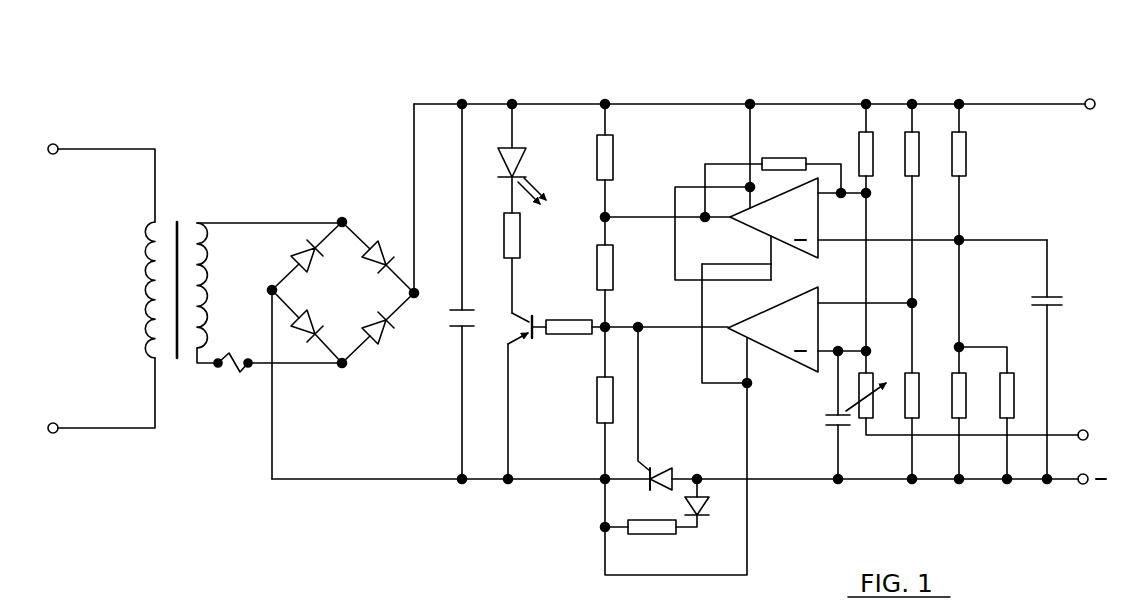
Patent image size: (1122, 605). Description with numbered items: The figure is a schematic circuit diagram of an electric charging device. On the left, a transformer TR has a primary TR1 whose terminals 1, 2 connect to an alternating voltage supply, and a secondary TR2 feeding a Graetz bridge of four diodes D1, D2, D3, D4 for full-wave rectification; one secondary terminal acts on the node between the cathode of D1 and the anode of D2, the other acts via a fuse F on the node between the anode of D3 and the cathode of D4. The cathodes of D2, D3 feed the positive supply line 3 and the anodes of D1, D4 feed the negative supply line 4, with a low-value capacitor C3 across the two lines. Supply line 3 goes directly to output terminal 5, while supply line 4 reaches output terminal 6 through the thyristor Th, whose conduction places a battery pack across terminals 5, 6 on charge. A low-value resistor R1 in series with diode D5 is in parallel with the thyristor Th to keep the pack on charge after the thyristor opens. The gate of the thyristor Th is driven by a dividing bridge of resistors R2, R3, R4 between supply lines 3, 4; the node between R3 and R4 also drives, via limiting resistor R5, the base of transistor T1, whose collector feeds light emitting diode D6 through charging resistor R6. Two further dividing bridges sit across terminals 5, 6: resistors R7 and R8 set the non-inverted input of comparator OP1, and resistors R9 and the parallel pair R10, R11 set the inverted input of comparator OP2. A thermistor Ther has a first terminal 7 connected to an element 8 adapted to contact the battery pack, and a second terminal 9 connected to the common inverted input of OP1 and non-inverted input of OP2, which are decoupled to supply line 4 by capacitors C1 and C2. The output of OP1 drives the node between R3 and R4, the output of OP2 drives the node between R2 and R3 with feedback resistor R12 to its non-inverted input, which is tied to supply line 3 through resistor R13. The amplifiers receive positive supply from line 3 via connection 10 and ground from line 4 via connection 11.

The primary terminal 1 is at (55, 144).
The primary terminal 2 is at (54, 433).
The supply line 3 is at (562, 104).
The supply line 4 is at (376, 482).
The output terminal 5 is at (1092, 99).
The output terminal 6 is at (1080, 485).
The first terminal of the thermistor 7 is at (962, 432).
The element 8 is at (1083, 430).
The second terminal of the thermistor 9 is at (862, 354).
The connection 10 is at (750, 135).
The connection 11 is at (747, 555).
The transformer TR is at (205, 238).
The primary TR1 is at (150, 290).
The secondary TR2 is at (198, 290).
The fuse F is at (278, 372).
The diode D1 is at (299, 256).
The diode D2 is at (378, 257).
The diode D3 is at (378, 328).
The diode D4 is at (307, 326).
The diode D5 is at (701, 501).
The light emitting diode D6 is at (524, 157).
The capacitor C1 is at (828, 417).
The capacitor C2 is at (1050, 362).
The capacitor C3 is at (468, 292).
The transistor T1 is at (514, 398).
The thyristor Th is at (655, 408).
The thermistor Ther is at (878, 372).
The operational amplifier-comparator OP1 is at (817, 335).
The operational amplifier-comparator OP2 is at (826, 283).
The resistor R1 is at (639, 541).
The resistor R2 is at (617, 161).
The resistor R3 is at (617, 272).
The resistor R4 is at (590, 405).
The limiting resistor R5 is at (637, 315).
The charging resistor R6 is at (523, 263).
The resistor R7 is at (923, 237).
The resistor R8 is at (922, 428).
The resistor R9 is at (969, 237).
The resistor R10 is at (972, 428).
The resistor R11 is at (1000, 415).
The resistor R12 is at (773, 176).
The resistor R13 is at (880, 226).